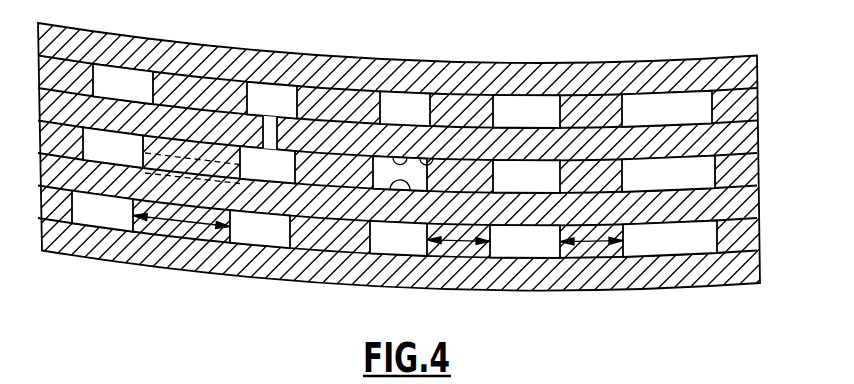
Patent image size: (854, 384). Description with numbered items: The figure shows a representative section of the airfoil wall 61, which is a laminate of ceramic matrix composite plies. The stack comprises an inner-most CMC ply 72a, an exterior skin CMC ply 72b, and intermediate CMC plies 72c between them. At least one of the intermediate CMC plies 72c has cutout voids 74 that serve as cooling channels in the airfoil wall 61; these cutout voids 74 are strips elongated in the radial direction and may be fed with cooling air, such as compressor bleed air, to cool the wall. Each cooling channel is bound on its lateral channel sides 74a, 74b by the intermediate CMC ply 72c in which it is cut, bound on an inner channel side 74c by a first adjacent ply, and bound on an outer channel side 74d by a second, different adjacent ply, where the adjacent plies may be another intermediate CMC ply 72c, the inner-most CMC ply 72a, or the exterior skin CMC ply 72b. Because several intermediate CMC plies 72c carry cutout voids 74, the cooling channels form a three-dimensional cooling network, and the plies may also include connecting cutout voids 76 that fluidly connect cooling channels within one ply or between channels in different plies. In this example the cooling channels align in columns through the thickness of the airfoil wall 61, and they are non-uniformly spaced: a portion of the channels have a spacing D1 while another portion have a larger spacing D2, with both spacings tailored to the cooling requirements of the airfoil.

The airfoil wall 61 is at (182, 271).
The inner-most CMC ply 72a is at (507, 68).
The exterior skin CMC ply 72b is at (590, 290).
The intermediate CMC plies 72c is at (765, 88).
The cutout voids 74 is at (528, 243).
The lateral channel side 74a is at (380, 168).
The lateral channel side 74b is at (422, 170).
The inner channel side 74c is at (411, 168).
The outer channel side 74d is at (406, 190).
The connecting cutout voids 76 is at (262, 122).
The spacing D1 is at (465, 238).
The larger spacing D2 is at (200, 226).